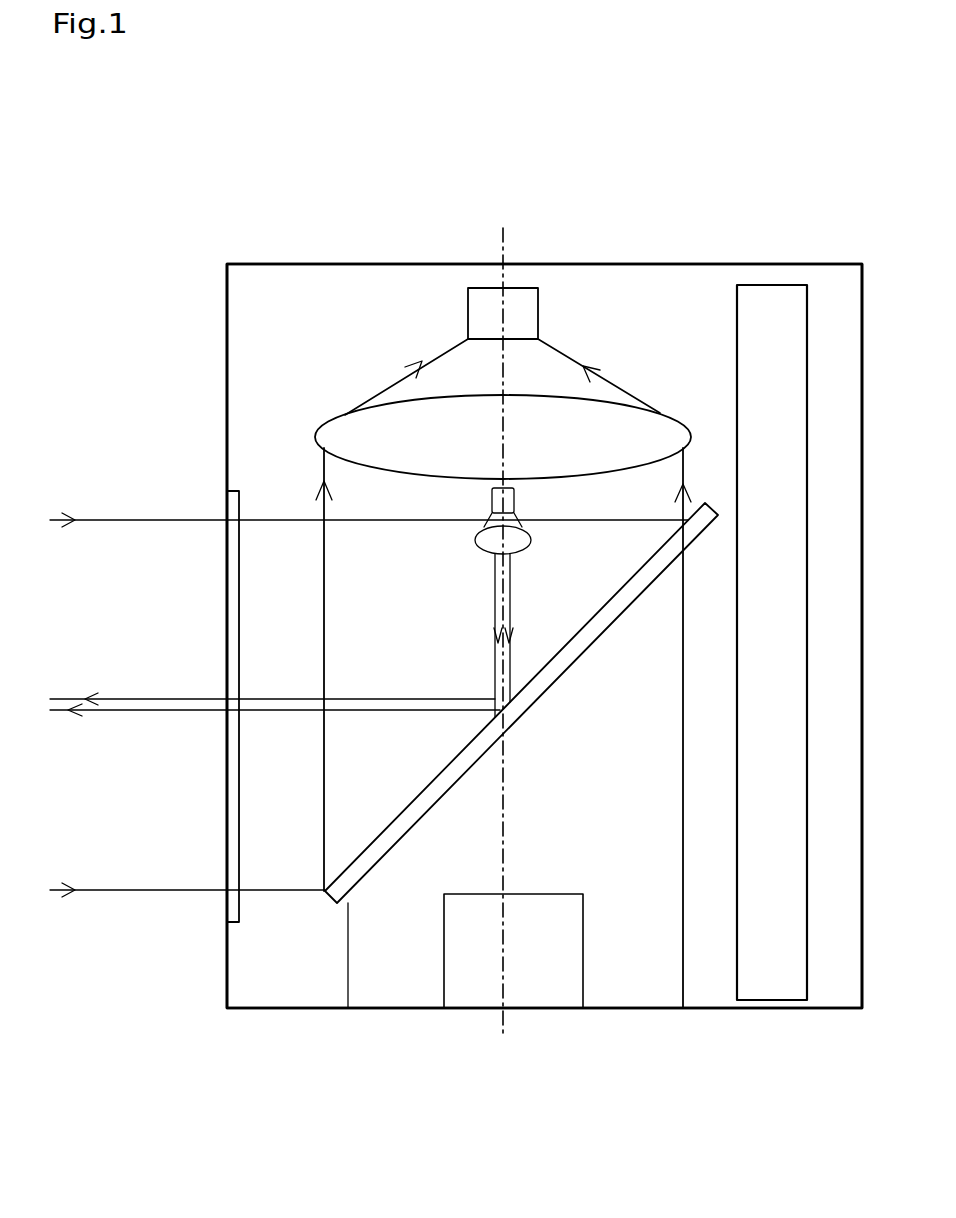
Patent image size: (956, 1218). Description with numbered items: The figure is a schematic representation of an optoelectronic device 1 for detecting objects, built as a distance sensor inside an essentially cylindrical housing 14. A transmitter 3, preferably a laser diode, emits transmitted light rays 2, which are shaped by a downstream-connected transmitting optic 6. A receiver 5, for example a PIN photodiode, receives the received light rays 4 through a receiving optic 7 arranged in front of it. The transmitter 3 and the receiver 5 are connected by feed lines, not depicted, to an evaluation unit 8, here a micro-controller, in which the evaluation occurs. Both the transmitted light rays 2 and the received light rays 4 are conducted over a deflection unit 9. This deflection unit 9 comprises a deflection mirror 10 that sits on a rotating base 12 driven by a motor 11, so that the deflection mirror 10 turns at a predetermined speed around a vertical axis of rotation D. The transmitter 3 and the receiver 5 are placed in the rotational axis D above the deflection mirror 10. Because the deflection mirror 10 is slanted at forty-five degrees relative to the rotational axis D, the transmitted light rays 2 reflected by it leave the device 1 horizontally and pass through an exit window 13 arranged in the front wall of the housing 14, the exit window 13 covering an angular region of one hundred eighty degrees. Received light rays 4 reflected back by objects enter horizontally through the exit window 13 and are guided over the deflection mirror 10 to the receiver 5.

The optoelectronic device 1 is at (437, 256).
The transmitted light rays 2 is at (275, 681).
The transmitter 3 is at (514, 498).
The received light rays 4 is at (122, 517).
The receiver 5 is at (528, 320).
The transmitting optic 6 is at (516, 543).
The receiving optic 7 is at (350, 428).
The evaluation unit 8 is at (748, 361).
The deflection unit 9 is at (690, 808).
The deflection mirror 10 is at (530, 693).
The motor 11 is at (565, 938).
The rotating base 12 is at (665, 930).
The exit window 13 is at (232, 612).
The housing 14 is at (228, 358).
The axis of rotation D is at (508, 836).